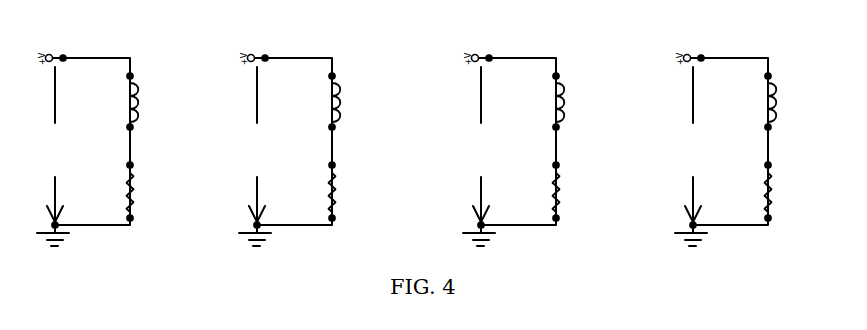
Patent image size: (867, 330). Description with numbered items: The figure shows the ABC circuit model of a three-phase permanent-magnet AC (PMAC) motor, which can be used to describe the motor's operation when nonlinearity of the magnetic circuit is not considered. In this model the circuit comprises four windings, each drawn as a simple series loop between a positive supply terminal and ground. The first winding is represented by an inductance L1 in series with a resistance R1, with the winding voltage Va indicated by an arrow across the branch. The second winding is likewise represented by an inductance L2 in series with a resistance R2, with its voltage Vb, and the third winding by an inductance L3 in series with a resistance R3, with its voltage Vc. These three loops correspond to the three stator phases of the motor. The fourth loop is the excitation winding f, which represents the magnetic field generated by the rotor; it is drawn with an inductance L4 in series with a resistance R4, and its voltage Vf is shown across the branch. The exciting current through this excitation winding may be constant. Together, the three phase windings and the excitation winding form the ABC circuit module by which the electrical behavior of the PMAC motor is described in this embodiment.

The inductance L1 is at (145, 101).
The resistance R1 is at (144, 191).
The voltage Va is at (53, 147).
The inductance L2 is at (347, 101).
The resistance R2 is at (346, 191).
The voltage Vb is at (256, 147).
The inductance L3 is at (571, 101).
The resistance R3 is at (570, 191).
The voltage Vc is at (479, 147).
The inductance L4 is at (783, 101).
The resistance R4 is at (783, 191).
The voltage Vf is at (691, 147).